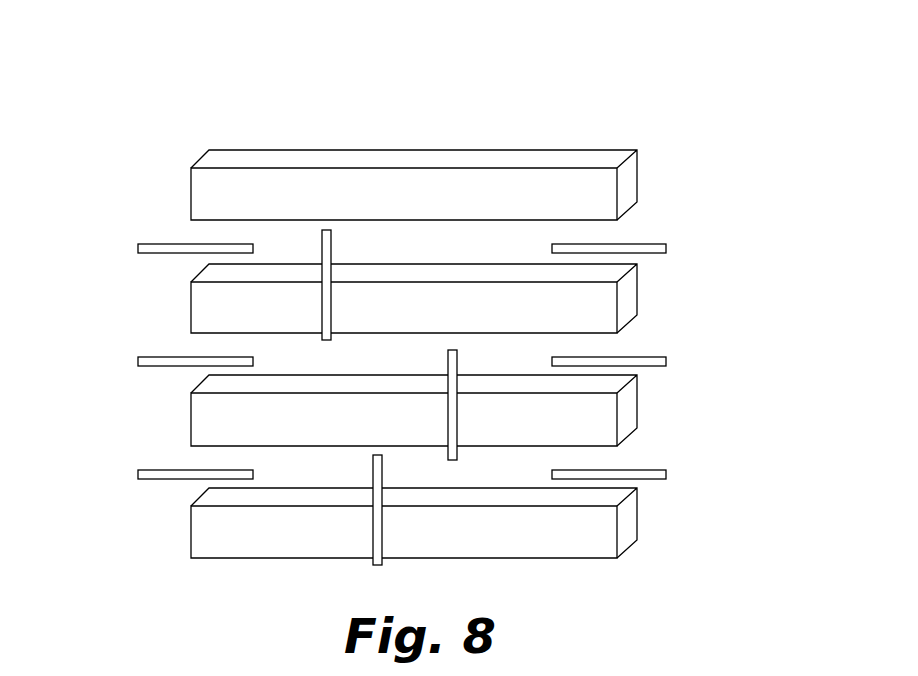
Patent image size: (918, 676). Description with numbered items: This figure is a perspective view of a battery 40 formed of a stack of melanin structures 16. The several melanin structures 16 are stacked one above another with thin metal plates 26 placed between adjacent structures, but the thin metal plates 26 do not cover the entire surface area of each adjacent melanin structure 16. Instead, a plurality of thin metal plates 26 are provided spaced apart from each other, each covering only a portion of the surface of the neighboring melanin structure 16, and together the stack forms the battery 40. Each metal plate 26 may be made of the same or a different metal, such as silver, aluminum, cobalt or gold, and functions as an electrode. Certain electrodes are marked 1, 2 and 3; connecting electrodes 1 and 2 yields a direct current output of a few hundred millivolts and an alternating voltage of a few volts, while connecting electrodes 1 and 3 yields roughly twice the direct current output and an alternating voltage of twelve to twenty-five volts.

The battery 40 is at (762, 106).
The melanin structure 16 is at (584, 188).
The thin metal plate 26 is at (408, 375).
The electrode marked 1 is at (666, 249).
The electrode marked 2 is at (138, 474).
The electrode marked 3 is at (666, 475).